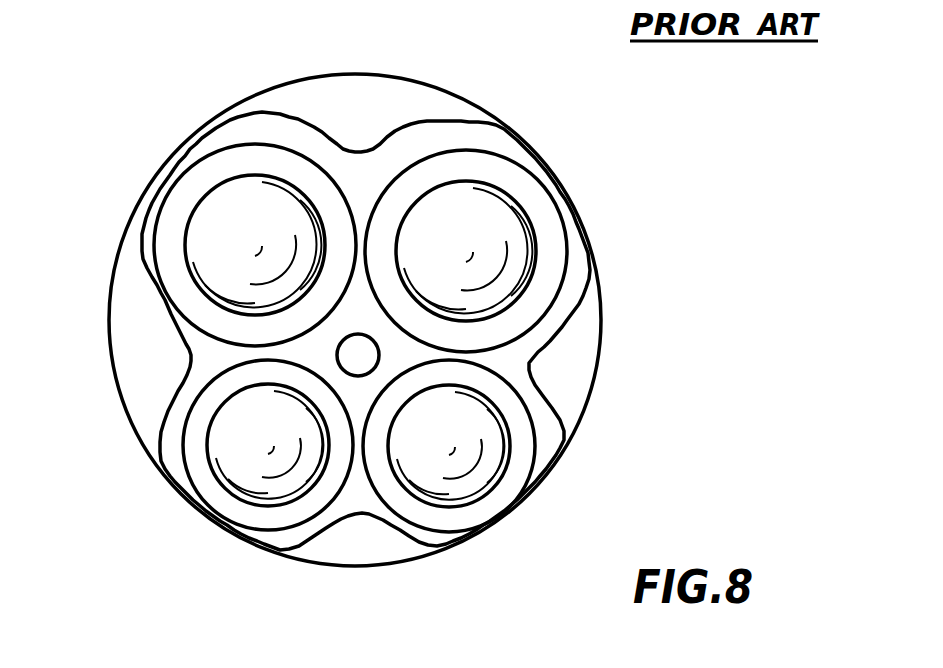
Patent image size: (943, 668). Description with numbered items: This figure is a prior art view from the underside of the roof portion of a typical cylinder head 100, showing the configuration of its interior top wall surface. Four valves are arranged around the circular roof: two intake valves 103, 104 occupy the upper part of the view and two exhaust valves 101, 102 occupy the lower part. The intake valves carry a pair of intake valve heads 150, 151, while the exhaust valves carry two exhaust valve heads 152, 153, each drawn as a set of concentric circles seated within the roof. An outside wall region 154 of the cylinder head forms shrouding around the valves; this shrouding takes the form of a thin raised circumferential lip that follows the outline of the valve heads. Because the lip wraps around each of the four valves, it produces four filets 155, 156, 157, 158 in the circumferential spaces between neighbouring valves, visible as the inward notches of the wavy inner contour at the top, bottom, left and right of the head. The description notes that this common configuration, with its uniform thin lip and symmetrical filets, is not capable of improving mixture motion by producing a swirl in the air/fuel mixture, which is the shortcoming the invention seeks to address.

The cylinder head 100 is at (370, 183).
The exhaust valve 101 is at (228, 495).
The exhaust valve 102 is at (488, 500).
The intake valve 103 is at (216, 184).
The intake valve 104 is at (540, 255).
The intake valve head 150 is at (210, 266).
The intake valve head 151 is at (479, 199).
The exhaust valve head 152 is at (235, 432).
The exhaust valve head 153 is at (520, 393).
The outside wall region 154 is at (610, 341).
The filet 155 is at (565, 410).
The filet 156 is at (363, 543).
The filet 157 is at (147, 365).
The filet 158 is at (357, 107).